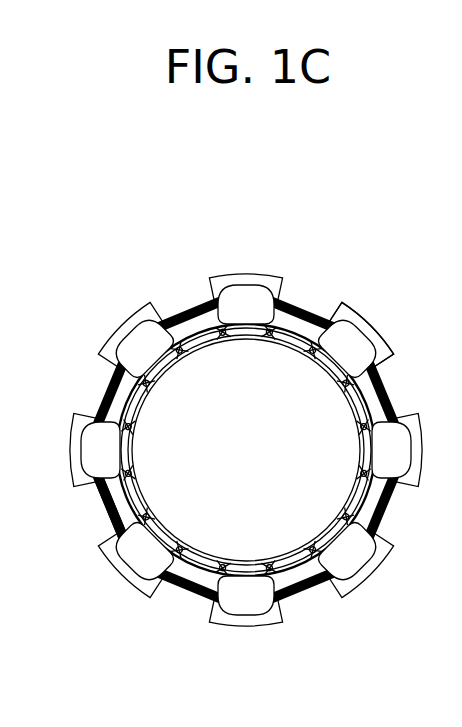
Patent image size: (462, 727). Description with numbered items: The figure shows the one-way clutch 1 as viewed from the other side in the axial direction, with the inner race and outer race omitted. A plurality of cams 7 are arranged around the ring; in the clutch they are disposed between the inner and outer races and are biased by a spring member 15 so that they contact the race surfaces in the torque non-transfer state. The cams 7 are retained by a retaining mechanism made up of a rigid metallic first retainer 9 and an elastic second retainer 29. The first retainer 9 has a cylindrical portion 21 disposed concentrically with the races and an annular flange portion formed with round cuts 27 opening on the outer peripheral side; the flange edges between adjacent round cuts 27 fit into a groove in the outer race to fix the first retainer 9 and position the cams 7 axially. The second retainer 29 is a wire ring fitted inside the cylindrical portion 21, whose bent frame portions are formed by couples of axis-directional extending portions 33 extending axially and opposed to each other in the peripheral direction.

The one-way clutch 1 is at (354, 208).
The cam 7 is at (140, 338).
The first retainer 9 is at (369, 306).
The spring member 15 is at (104, 512).
The cylindrical portion 21 is at (124, 404).
The round cut 27 is at (338, 302).
The second retainer 29 is at (150, 489).
The axis-directional extending portion 33 is at (131, 428).